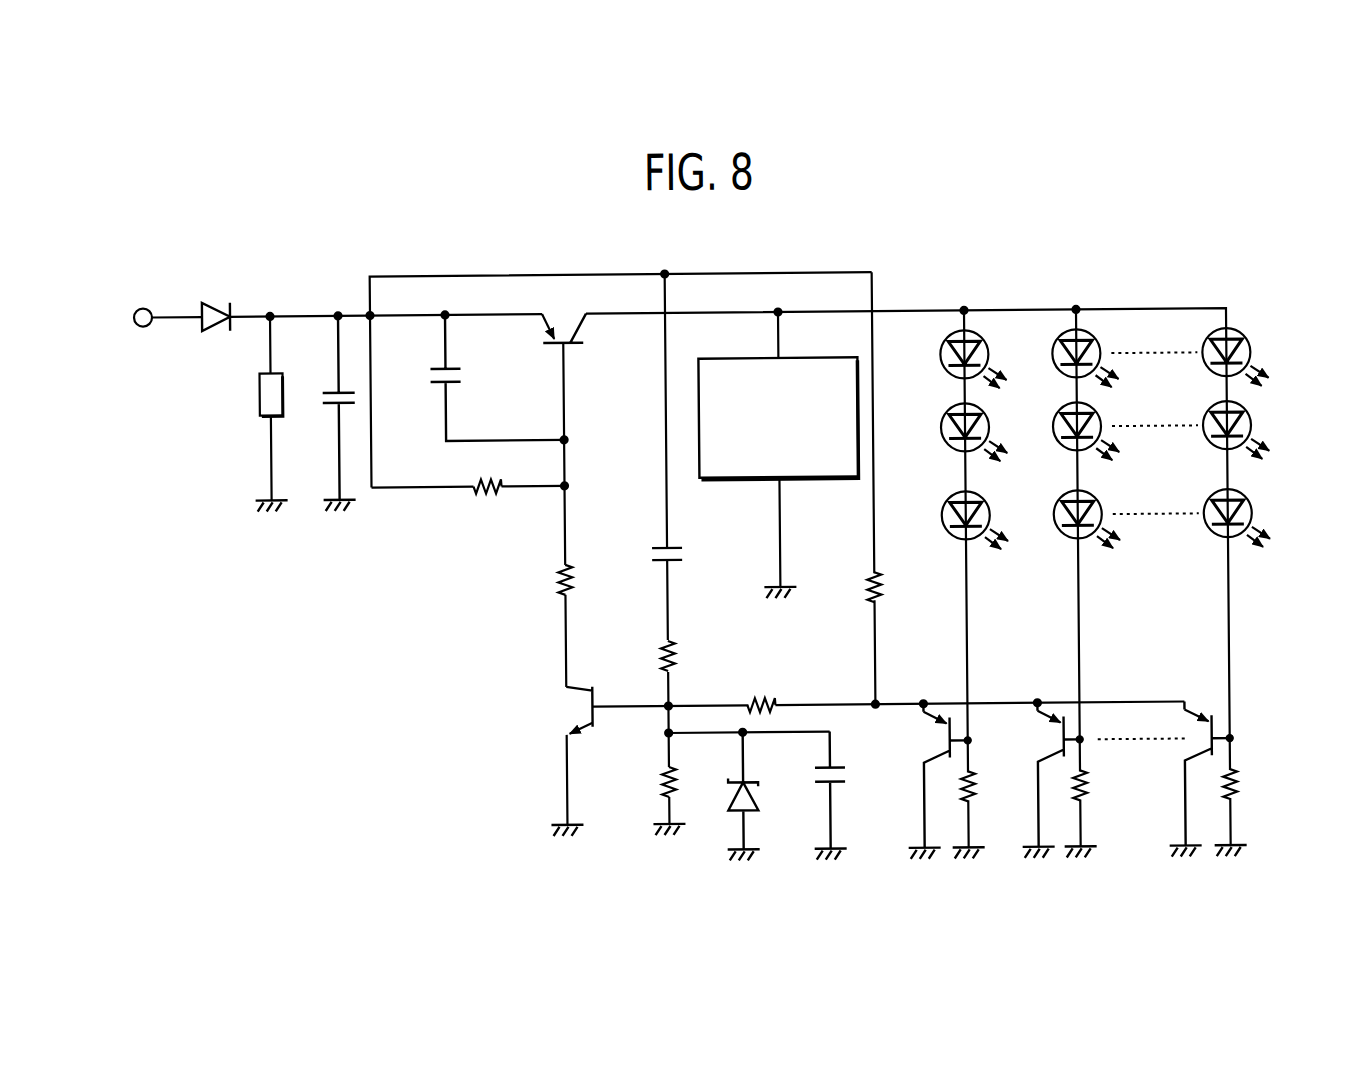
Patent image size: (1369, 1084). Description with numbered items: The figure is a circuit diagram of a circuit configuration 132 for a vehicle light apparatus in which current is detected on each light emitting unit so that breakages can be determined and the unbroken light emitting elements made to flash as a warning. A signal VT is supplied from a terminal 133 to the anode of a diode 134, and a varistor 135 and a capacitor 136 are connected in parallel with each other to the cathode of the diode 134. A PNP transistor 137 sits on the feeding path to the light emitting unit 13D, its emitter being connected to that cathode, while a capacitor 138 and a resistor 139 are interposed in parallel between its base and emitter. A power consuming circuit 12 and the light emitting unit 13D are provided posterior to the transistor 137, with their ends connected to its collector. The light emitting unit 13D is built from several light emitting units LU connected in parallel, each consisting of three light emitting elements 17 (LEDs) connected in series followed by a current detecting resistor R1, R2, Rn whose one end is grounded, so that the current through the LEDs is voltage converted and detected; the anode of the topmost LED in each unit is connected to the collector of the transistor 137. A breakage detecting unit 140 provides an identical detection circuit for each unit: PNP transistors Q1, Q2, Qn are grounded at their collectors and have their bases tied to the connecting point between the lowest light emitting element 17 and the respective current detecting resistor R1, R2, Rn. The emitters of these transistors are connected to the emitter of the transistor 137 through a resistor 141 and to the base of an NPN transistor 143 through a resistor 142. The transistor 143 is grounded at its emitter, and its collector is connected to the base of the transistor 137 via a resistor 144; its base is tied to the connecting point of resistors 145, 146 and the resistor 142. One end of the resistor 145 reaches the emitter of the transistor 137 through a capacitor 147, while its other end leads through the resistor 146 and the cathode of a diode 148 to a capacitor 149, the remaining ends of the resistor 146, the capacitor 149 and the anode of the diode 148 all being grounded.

The power consuming circuit 12 is at (743, 484).
The light emitting unit 13D is at (1160, 267).
The light emitting element 17 is at (949, 377).
The circuit configuration 132 is at (856, 250).
The terminal 133 is at (140, 323).
The diode 134 is at (203, 298).
The varistor 135 is at (258, 393).
The capacitor 136 is at (330, 405).
The PNP transistor 137 is at (541, 320).
The capacitor 138 is at (435, 388).
The resistor 139 is at (485, 495).
The breakage detecting unit 140 is at (1266, 731).
The resistor 141 is at (875, 602).
The resistor 142 is at (753, 693).
The NPN transistor 143 is at (573, 693).
The resistor 144 is at (553, 576).
The resistor 145 is at (660, 648).
The resistor 146 is at (660, 778).
The capacitor 147 is at (658, 563).
The diode 148 is at (756, 798).
The capacitor 149 is at (833, 789).
The light emitting unit LU is at (992, 301).
The PNP transistor Q1 is at (937, 781).
The PNP transistor Q2 is at (1050, 780).
The PNP transistor Qn is at (1201, 771).
The current detecting resistor R1 is at (984, 799).
The current detecting resistor R2 is at (1095, 798).
The current detecting resistor Rn is at (1246, 797).